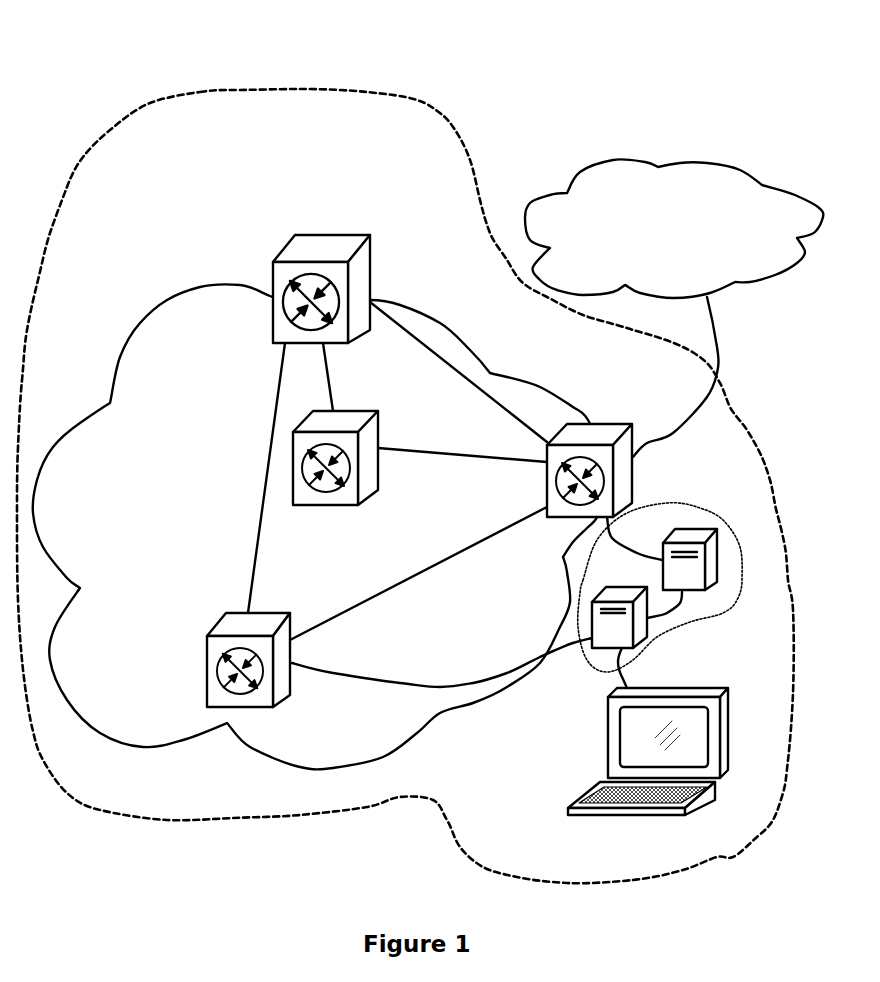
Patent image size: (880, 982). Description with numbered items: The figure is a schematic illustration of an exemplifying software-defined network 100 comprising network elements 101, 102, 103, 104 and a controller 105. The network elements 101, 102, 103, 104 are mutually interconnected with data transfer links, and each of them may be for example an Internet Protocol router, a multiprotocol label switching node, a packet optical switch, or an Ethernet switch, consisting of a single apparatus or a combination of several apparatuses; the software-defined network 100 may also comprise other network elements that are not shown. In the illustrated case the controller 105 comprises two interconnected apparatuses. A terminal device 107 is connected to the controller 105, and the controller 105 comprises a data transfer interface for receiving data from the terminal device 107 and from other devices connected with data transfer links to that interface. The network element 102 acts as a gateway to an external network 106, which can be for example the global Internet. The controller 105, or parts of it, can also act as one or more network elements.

The software-defined network 100 is at (197, 93).
The network element 101 is at (205, 697).
The network element 102 is at (608, 422).
The network element 103 is at (350, 413).
The network element 104 is at (282, 257).
The controller 105 is at (692, 503).
The external network 106 is at (692, 237).
The terminal device 107 is at (717, 688).